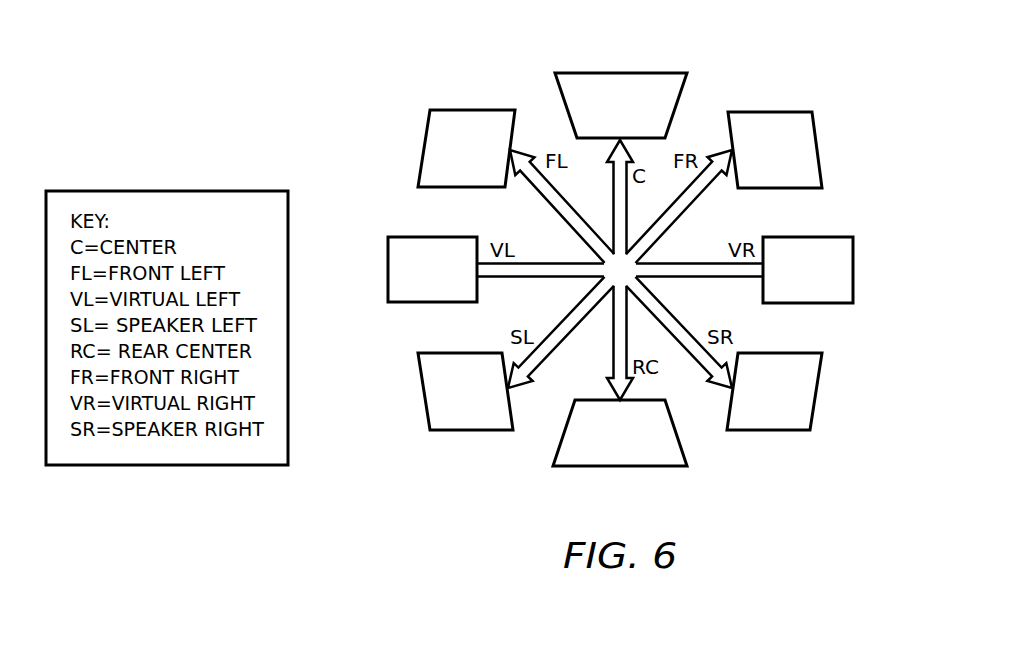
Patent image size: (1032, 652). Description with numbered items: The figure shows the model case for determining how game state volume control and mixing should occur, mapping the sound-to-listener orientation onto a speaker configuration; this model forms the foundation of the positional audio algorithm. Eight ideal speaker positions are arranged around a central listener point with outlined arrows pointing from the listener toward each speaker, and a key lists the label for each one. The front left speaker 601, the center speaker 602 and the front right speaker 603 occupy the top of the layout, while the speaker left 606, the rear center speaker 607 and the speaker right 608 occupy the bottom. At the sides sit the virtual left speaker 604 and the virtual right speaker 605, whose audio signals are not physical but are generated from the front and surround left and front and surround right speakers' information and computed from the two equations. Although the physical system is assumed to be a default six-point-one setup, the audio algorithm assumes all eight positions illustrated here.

The front left speaker 601 is at (472, 108).
The center speaker 602 is at (600, 73).
The front right speaker 603 is at (768, 112).
The virtual left speaker 604 is at (388, 255).
The virtual right speaker 605 is at (853, 262).
The speaker left 606 is at (472, 430).
The rear center speaker 607 is at (600, 467).
The speaker right 608 is at (770, 432).